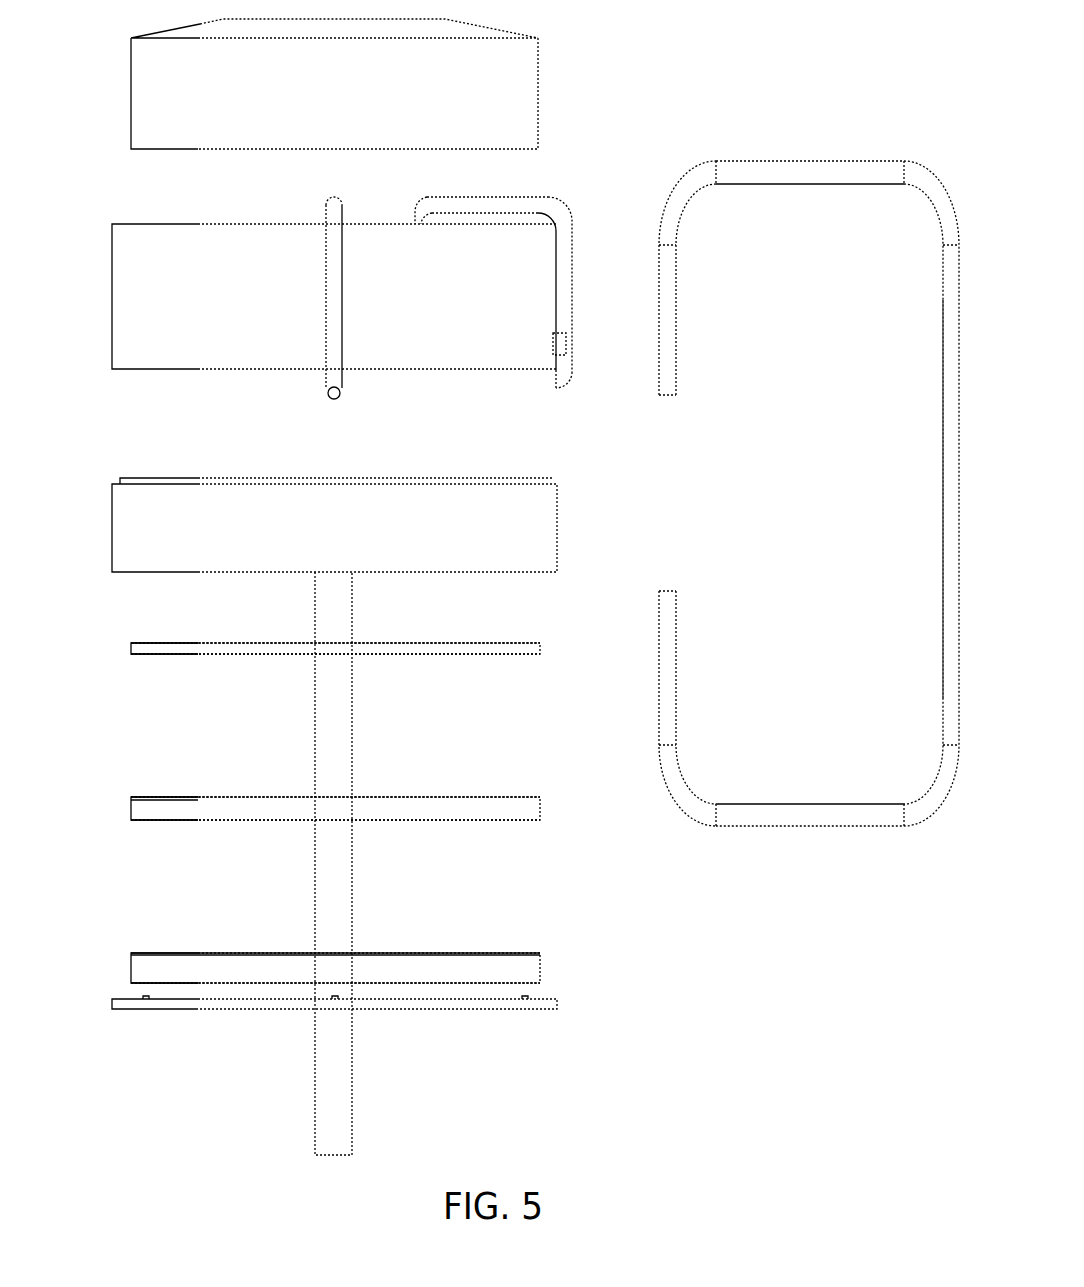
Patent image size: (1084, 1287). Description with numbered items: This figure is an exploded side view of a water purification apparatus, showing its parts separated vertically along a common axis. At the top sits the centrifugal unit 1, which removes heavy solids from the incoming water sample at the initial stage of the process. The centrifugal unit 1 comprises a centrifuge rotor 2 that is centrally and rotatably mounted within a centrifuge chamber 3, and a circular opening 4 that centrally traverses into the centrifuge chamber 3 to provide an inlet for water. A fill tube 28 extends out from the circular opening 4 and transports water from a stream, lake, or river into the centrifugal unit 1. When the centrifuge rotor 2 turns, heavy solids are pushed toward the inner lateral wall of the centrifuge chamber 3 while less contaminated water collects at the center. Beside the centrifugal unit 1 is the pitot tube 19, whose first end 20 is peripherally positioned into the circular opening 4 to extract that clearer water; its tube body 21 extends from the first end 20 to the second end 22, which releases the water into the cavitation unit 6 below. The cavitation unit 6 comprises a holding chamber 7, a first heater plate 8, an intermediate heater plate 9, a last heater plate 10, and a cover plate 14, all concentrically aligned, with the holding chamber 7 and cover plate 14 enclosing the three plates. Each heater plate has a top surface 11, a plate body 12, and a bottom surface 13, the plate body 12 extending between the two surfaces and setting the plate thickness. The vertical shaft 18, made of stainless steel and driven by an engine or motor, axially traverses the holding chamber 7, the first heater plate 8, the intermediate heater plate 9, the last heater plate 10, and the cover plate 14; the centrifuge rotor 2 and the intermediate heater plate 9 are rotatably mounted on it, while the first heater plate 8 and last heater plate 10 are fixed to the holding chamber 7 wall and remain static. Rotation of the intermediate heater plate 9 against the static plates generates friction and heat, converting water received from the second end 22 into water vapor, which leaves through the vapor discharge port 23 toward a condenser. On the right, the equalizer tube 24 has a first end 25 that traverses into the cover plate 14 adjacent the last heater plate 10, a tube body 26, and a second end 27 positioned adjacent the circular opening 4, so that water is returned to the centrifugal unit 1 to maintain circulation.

The centrifugal unit 1 is at (100, 177).
The centrifuge rotor 2 is at (529, 103).
The centrifuge chamber 3 is at (219, 357).
The circular opening 4 is at (306, 219).
The cavitation unit 6 is at (563, 749).
The holding chamber 7 is at (553, 512).
The first heater plate 8 is at (123, 648).
The intermediate heater plate 9 is at (124, 808).
The last heater plate 10 is at (124, 966).
The top surface 11 is at (498, 643).
The plate body 12 is at (241, 654).
The bottom surface 13 is at (506, 656).
The cover plate 14 is at (505, 1011).
The vertical shaft 18 is at (348, 1078).
The pitot tube 19 is at (588, 314).
The first end 20 is at (414, 222).
The tube body 21 is at (571, 259).
The second end 22 is at (553, 392).
The vapor discharge port 23 is at (552, 342).
The equalizer tube 24 is at (789, 140).
The first end 25 is at (677, 592).
The tube body 26 is at (944, 568).
The second end 27 is at (677, 396).
The fill tube 28 is at (341, 296).